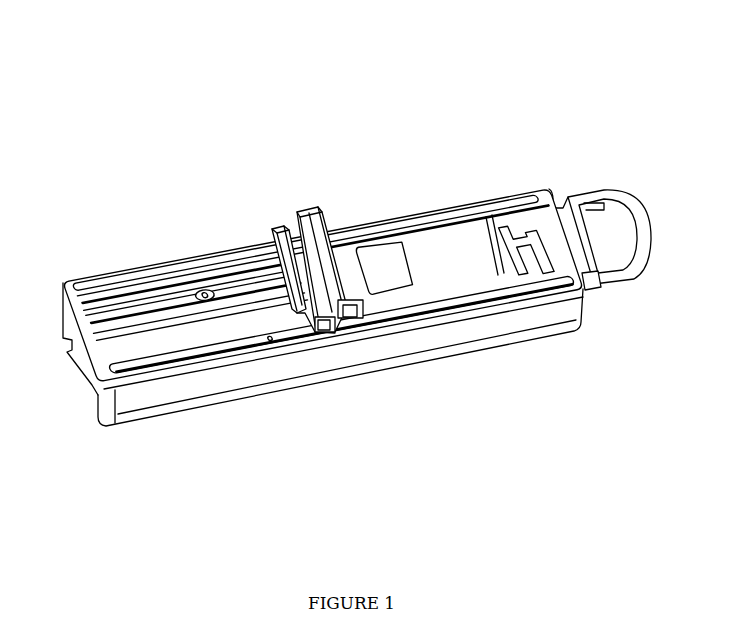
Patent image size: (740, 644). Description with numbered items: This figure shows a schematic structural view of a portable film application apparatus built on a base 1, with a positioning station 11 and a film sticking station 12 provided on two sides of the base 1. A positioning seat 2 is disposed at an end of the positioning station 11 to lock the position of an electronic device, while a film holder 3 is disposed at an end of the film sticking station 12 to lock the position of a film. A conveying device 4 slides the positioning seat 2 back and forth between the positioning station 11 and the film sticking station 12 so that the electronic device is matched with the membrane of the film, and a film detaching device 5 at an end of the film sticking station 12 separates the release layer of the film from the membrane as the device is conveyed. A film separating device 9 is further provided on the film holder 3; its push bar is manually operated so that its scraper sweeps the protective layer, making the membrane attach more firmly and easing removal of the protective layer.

The base 1 is at (497, 328).
The positioning seat 2 is at (482, 241).
The film holder 3 is at (148, 283).
The conveying device 4 is at (588, 288).
The film detaching device 5 is at (192, 337).
The film separating device 9 is at (318, 339).
The positioning station 11 is at (425, 148).
The film sticking station 12 is at (180, 197).